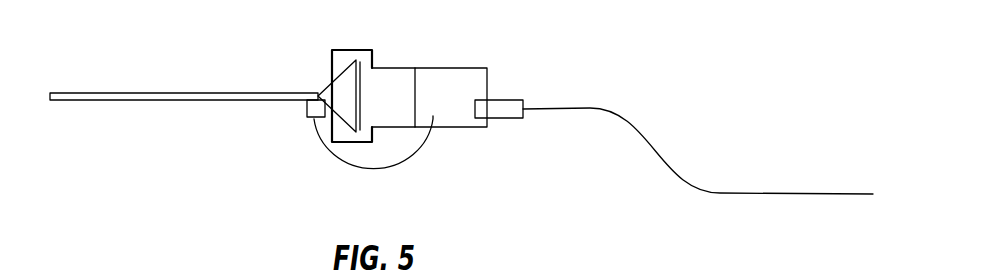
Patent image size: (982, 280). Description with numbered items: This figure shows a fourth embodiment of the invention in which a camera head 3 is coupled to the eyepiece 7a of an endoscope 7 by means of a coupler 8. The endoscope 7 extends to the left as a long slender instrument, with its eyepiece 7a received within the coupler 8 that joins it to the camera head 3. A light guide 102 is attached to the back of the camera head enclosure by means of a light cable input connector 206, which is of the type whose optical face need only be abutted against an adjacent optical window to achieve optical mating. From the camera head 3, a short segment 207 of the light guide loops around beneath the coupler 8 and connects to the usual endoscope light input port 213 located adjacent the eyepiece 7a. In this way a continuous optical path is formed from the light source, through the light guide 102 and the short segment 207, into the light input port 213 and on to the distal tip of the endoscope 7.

The endoscope 7 is at (184, 74).
The eyepiece 7a is at (308, 83).
The coupler 8 is at (390, 82).
The camera head 3 is at (462, 75).
The light cable input connector 206 is at (532, 86).
The endoscope light input port 213 is at (272, 133).
The short segment of light guide 207 is at (405, 166).
The light guide 102 is at (698, 151).